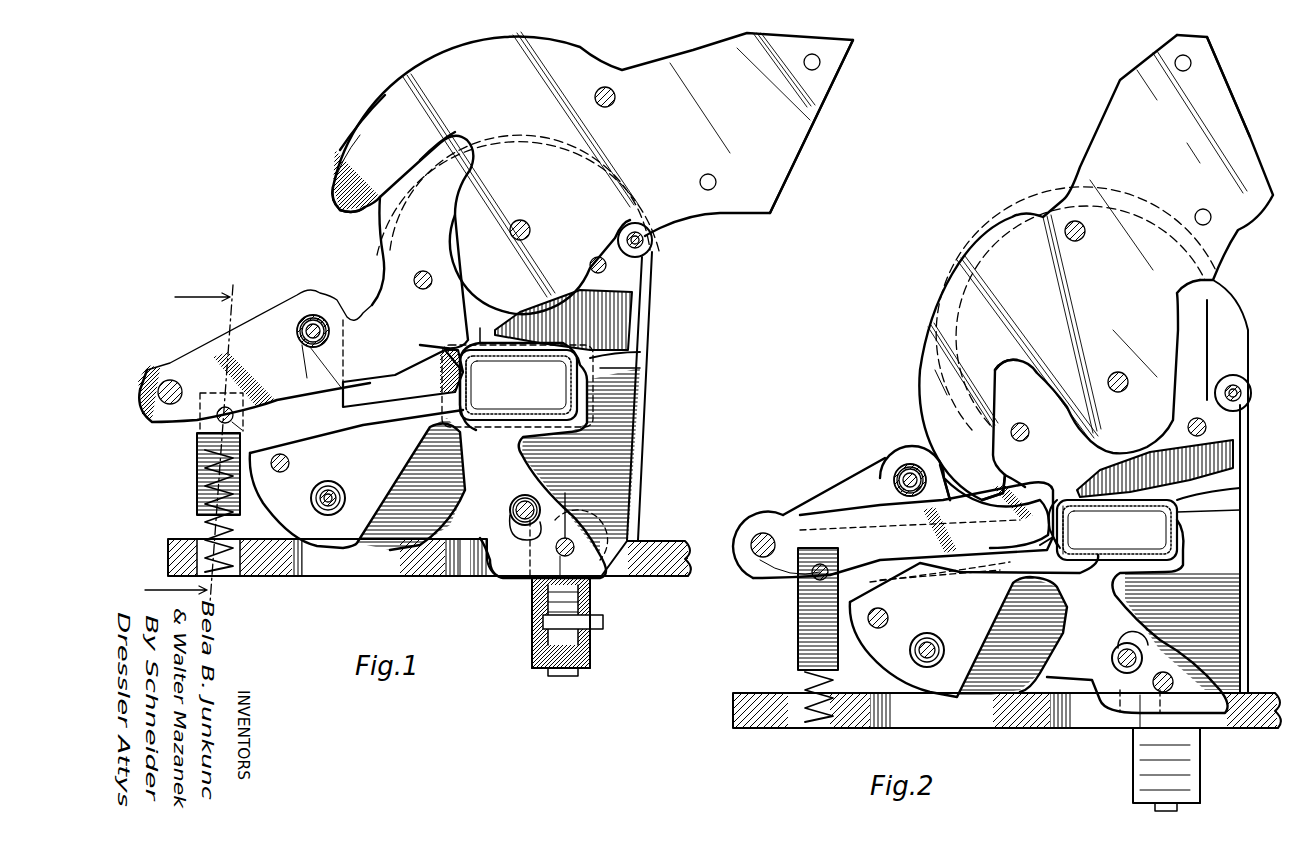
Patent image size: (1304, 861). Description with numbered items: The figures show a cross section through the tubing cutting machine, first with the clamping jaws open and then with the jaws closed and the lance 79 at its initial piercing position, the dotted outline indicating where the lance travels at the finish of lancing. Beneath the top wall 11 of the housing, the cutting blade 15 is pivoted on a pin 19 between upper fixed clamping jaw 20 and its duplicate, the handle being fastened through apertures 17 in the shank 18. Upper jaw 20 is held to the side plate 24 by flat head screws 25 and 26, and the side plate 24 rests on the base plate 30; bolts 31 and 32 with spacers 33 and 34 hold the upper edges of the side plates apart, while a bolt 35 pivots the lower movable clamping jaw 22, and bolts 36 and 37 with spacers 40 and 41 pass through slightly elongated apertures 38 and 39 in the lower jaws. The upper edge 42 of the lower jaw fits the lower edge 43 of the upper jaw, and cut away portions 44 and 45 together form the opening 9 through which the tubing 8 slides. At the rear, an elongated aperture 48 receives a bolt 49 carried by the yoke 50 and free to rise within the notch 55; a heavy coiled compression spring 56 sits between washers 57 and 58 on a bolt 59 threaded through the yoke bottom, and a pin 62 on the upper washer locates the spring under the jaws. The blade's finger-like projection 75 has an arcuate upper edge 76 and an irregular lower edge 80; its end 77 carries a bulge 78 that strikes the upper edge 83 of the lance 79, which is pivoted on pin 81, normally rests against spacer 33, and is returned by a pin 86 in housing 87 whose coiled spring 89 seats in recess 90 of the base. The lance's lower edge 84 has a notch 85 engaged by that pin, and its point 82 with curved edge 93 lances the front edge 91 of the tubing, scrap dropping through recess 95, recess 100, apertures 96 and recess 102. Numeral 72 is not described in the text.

In FIG. 2, the tubing 8 is at (1117, 530).
In FIG. 1, the opening 9 is at (528, 415).
In FIG. 1, the top wall 11 is at (189, 444).
In FIG. 1, the cutting blade 15 is at (745, 228).
In FIG. 2, the cutting blade 15 is at (1096, 267).
In FIG. 1, the apertures 17 is at (820, 66).
In FIG. 2, the apertures 17 is at (1192, 62).
In FIG. 1, the shank 18 is at (792, 130).
In FIG. 2, the shank 18 is at (1218, 110).
In FIG. 1, the pin 19 is at (527, 222).
In FIG. 2, the pin 19 is at (1114, 373).
In FIG. 1, the upper fixed clamping jaw 20 is at (385, 243).
In FIG. 2, the upper fixed clamping jaw 20 is at (964, 497).
In FIG. 1, the lower movable clamping jaw 22 is at (297, 548).
In FIG. 2, the lower movable clamping jaw 22 is at (974, 626).
In FIG. 1, the side plate 24 is at (275, 315).
In FIG. 2, the side plate 24 is at (918, 505).
In FIG. 1, the flat head screw 25 is at (423, 270).
In FIG. 2, the flat head screw 25 is at (1029, 434).
In FIG. 1, the flat head screw 26 is at (606, 268).
In FIG. 2, the flat head screw 26 is at (1207, 428).
In FIG. 1, the base plate 30 is at (460, 570).
In FIG. 2, the base plate 30 is at (1025, 728).
In FIG. 1, the bolt 31 is at (314, 316).
In FIG. 2, the bolt 31 is at (905, 464).
In FIG. 1, the bolt 32 is at (642, 246).
In FIG. 2, the bolt 32 is at (1240, 387).
In FIG. 1, the spacer 33 is at (298, 331).
In FIG. 2, the spacer 33 is at (896, 478).
In FIG. 1, the spacer 34 is at (653, 241).
In FIG. 2, the spacer 34 is at (1225, 378).
In FIG. 1, the bolt 35 is at (288, 460).
In FIG. 1, the bolt 36 is at (336, 490).
In FIG. 2, the bolt 36 is at (937, 640).
In FIG. 1, the bolt 37 is at (522, 494).
In FIG. 2, the bolt 37 is at (1112, 660).
In FIG. 1, the aperture 38 is at (328, 484).
In FIG. 2, the aperture 38 is at (932, 635).
In FIG. 1, the aperture 39 is at (507, 518).
In FIG. 2, the aperture 39 is at (1122, 640).
In FIG. 1, the spacer 40 is at (312, 496).
In FIG. 2, the spacer 40 is at (876, 628).
In FIG. 1, the spacer 41 is at (510, 503).
In FIG. 1, the upper edge 42 is at (635, 370).
In FIG. 2, the upper edge 42 is at (1225, 512).
In FIG. 1, the lower edge 43 is at (630, 345).
In FIG. 2, the lower edge 43 is at (1200, 495).
In FIG. 1, the cut away portion 44 is at (493, 400).
In FIG. 1, the cut away portion 45 is at (475, 324).
In FIG. 1, the aperture 48 is at (530, 490).
In FIG. 2, the aperture 48 is at (1137, 616).
In FIG. 1, the bolt 49 is at (595, 578).
In FIG. 2, the bolt 49 is at (1205, 725).
In FIG. 1, the yoke 50 is at (592, 650).
In FIG. 2, the yoke 50 is at (1128, 772).
In FIG. 1, the notch 55 is at (565, 495).
In FIG. 2, the notch 55 is at (1163, 682).
In FIG. 1, the coiled compression spring 56 is at (592, 618).
In FIG. 1, the washer 57 is at (543, 625).
In FIG. 1, the washer 58 is at (530, 600).
In FIG. 1, the bolt 59 is at (555, 672).
In FIG. 2, the bolt 59 is at (1152, 806).
In FIG. 1, the pin 62 is at (560, 575).
In FIG. 2, the pin 62 is at (1133, 715).
In FIG. 1, the pin 72 is at (617, 97).
In FIG. 2, the pin 72 is at (1066, 228).
In FIG. 1, the finger-like projection 75 is at (350, 130).
In FIG. 2, the finger-like projection 75 is at (942, 385).
In FIG. 1, the upper edge 76 is at (285, 78).
In FIG. 1, the end 77 is at (360, 213).
In FIG. 2, the end 77 is at (1020, 490).
In FIG. 1, the bulge 78 is at (340, 212).
In FIG. 2, the bulge 78 is at (958, 470).
In FIG. 1, the lance 79 is at (254, 393).
In FIG. 2, the lance 79 is at (893, 546).
In FIG. 1, the lower edge 80 is at (422, 155).
In FIG. 2, the lower edge 80 is at (995, 407).
In FIG. 1, the pin 81 is at (170, 381).
In FIG. 2, the pin 81 is at (762, 533).
In FIG. 1, the point 82 is at (458, 368).
In FIG. 2, the point 82 is at (1118, 500).
In FIG. 1, the upper edge 83 is at (306, 350).
In FIG. 1, the lower edge 84 is at (368, 385).
In FIG. 2, the lower edge 84 is at (905, 580).
In FIG. 1, the notch 85 is at (225, 407).
In FIG. 2, the notch 85 is at (820, 563).
In FIG. 1, the pin 86 is at (232, 420).
In FIG. 2, the pin 86 is at (815, 578).
In FIG. 1, the housing 87 is at (197, 466).
In FIG. 2, the housing 87 is at (798, 641).
In FIG. 1, the coiled spring 89 is at (203, 523).
In FIG. 2, the coiled spring 89 is at (800, 680).
In FIG. 1, the recess 90 is at (240, 565).
In FIG. 1, the front edge 91 is at (470, 405).
In FIG. 2, the front edge 91 is at (1062, 528).
In FIG. 1, the curved edge portion 93 is at (440, 352).
In FIG. 2, the curved edge portion 93 is at (1039, 537).
In FIG. 1, the recess 95 is at (411, 484).
In FIG. 2, the recess 95 is at (1040, 625).
In FIG. 1, the apertures 96 is at (340, 572).
In FIG. 1, the recess 100 is at (622, 435).
In FIG. 2, the recess 100 is at (1130, 590).
In FIG. 1, the recess 102 is at (600, 315).
In FIG. 2, the recess 102 is at (1160, 460).